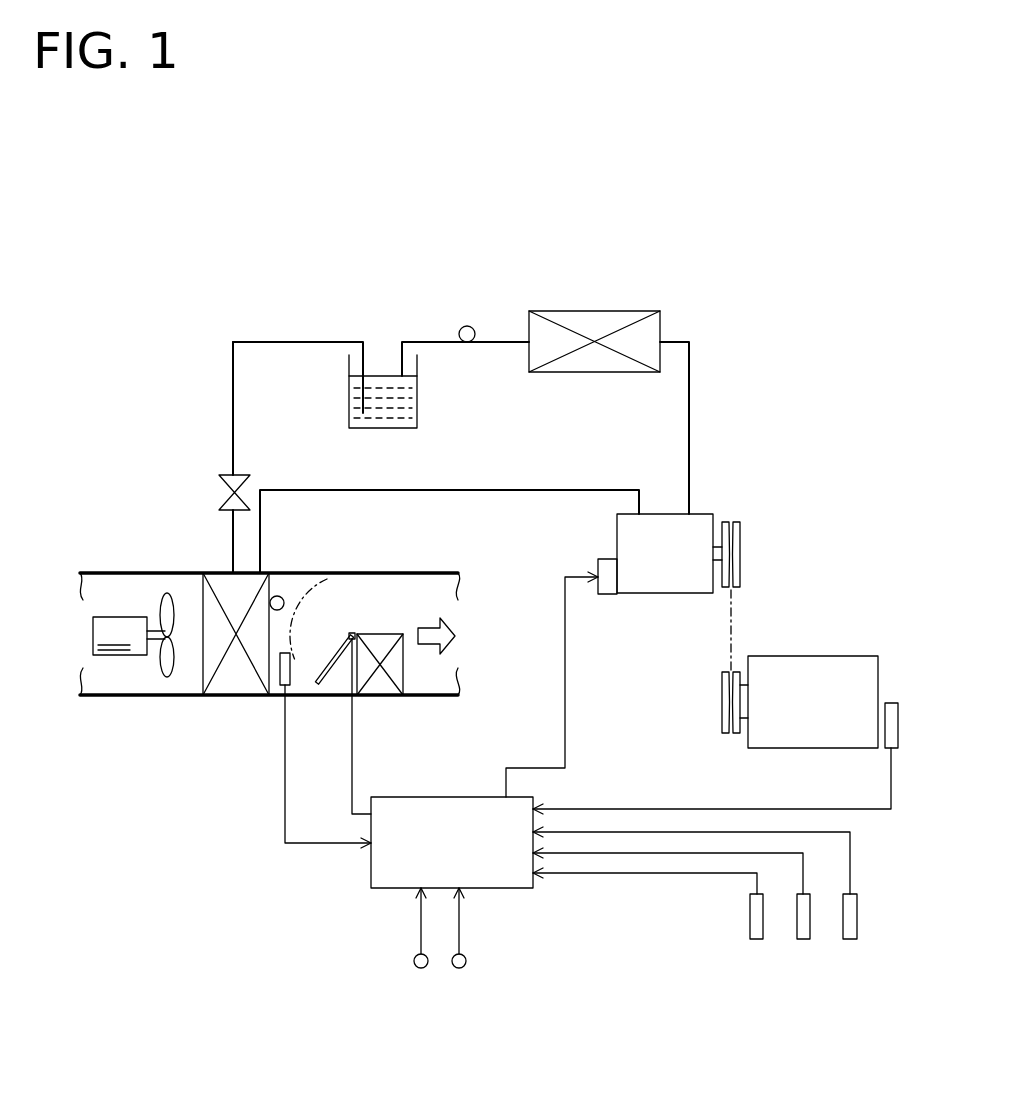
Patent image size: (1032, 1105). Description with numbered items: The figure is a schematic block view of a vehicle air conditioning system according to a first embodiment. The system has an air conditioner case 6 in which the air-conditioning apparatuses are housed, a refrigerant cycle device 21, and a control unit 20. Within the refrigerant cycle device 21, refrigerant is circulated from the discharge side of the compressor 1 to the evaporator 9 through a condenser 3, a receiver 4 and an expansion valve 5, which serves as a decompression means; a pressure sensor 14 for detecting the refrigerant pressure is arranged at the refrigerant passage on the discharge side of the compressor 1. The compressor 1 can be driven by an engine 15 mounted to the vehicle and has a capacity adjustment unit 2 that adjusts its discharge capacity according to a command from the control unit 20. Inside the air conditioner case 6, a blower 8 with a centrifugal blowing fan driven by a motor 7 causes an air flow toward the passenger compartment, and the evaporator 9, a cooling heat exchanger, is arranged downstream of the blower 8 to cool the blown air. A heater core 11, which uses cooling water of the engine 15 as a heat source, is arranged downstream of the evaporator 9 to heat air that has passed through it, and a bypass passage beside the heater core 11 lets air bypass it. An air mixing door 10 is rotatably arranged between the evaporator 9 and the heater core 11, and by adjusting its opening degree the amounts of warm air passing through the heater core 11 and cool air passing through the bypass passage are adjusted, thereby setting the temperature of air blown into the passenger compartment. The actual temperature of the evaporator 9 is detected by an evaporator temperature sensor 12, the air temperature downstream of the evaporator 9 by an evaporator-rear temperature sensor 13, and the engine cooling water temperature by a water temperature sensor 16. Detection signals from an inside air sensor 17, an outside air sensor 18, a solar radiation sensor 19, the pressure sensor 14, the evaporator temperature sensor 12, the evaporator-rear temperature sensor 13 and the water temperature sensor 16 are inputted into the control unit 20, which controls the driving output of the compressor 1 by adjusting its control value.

The compressor 1 is at (700, 514).
The capacity adjustment unit 2 is at (607, 595).
The condenser 3 is at (617, 311).
The receiver 4 is at (417, 408).
The expansion valve 5 is at (222, 478).
The air conditioner case 6 is at (150, 696).
The motor 7 is at (93, 630).
The blower 8 is at (160, 600).
The evaporator 9 is at (250, 588).
The air mixing door 10 is at (354, 632).
The heater core 11 is at (378, 683).
The evaporator temperature sensor 12 is at (283, 598).
The evaporator-rear temperature sensor 13 is at (280, 695).
The pressure sensor 14 is at (467, 326).
The engine 15 is at (845, 656).
The water temperature sensor 16 is at (890, 703).
The inside air sensor 17 is at (857, 918).
The outside air sensor 18 is at (797, 925).
The solar radiation sensor 19 is at (750, 925).
The control unit 20 is at (478, 797).
The refrigerant cycle device 21 is at (695, 410).